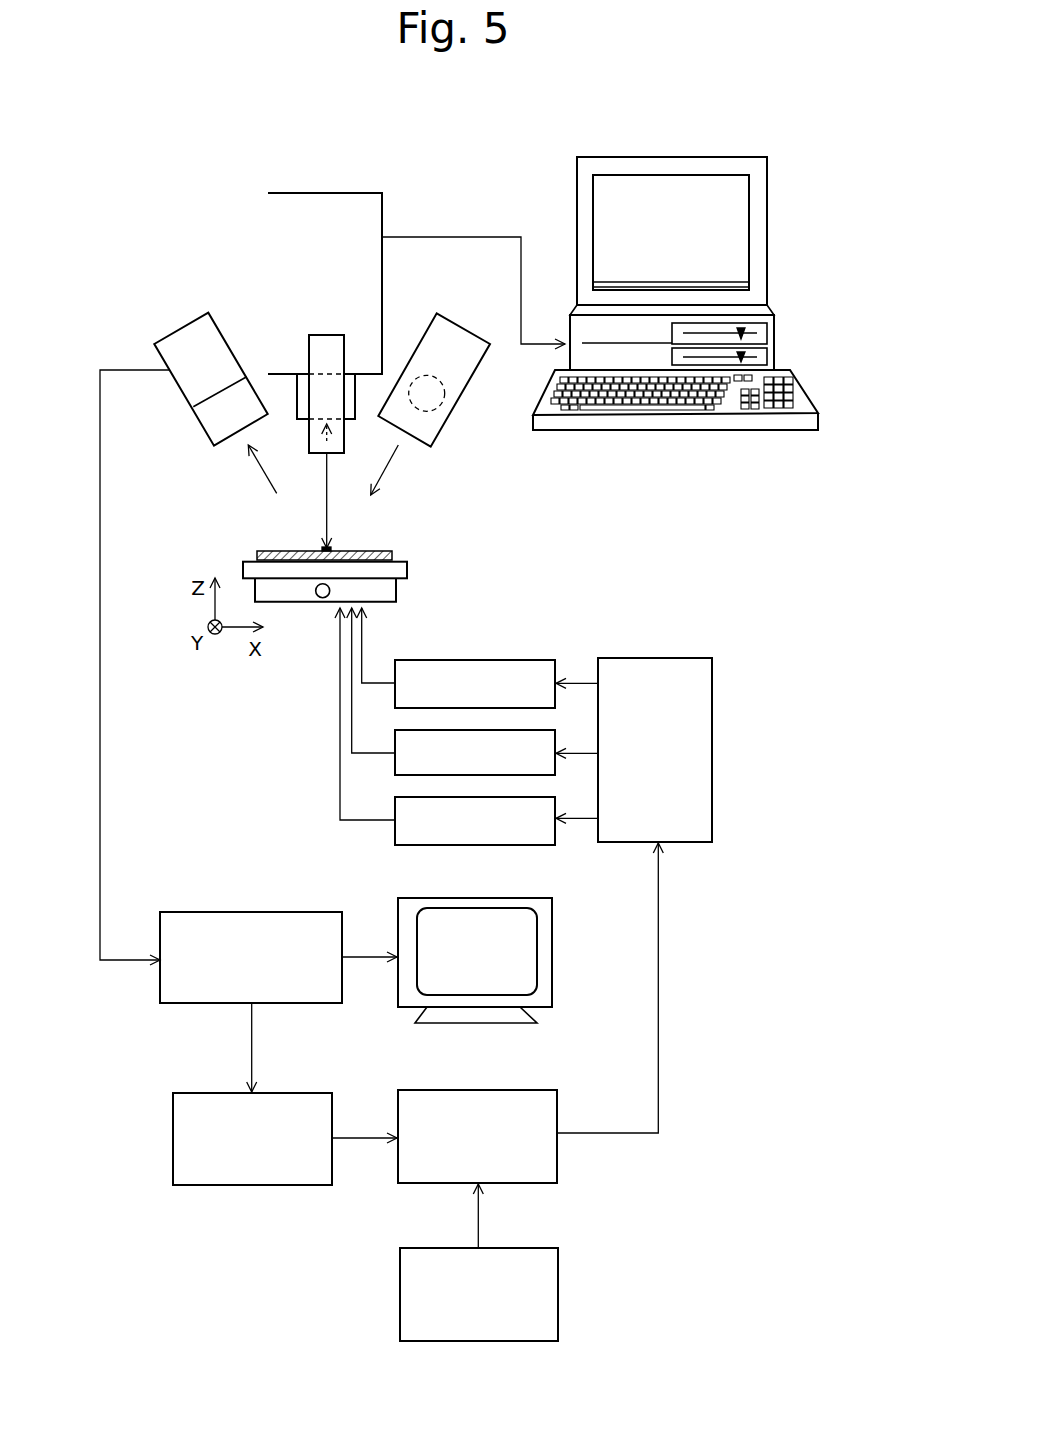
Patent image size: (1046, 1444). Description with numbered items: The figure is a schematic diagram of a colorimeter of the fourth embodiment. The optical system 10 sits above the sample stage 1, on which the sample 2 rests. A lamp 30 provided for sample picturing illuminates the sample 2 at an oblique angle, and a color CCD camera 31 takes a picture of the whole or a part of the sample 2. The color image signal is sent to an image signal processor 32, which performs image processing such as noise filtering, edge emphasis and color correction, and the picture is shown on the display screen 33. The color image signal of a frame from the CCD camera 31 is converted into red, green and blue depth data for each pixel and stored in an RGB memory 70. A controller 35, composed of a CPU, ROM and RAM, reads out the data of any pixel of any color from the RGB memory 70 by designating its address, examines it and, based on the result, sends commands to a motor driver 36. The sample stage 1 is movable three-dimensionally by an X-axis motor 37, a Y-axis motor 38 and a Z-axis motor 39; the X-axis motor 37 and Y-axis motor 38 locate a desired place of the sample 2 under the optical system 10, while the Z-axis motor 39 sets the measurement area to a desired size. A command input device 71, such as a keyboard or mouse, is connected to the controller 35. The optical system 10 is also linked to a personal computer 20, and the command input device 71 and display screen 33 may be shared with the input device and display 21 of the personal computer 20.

The sample stage 1 is at (407, 568).
The sample 2 is at (382, 550).
The optical system 10 is at (320, 190).
The personal computer 20 is at (775, 340).
The display of the personal computer 21 is at (767, 220).
The lamp 30 is at (462, 327).
The color CCD camera 31 is at (179, 327).
The image signal processor 32 is at (255, 910).
The display screen 33 is at (475, 1023).
The controller 35 is at (558, 1158).
The motor driver 36 is at (713, 755).
The X-axis motor 37 is at (488, 659).
The Y-axis motor 38 is at (418, 777).
The Z-axis motor 39 is at (418, 845).
The RGB memory 70 is at (248, 1185).
The command input device 71 is at (558, 1280).